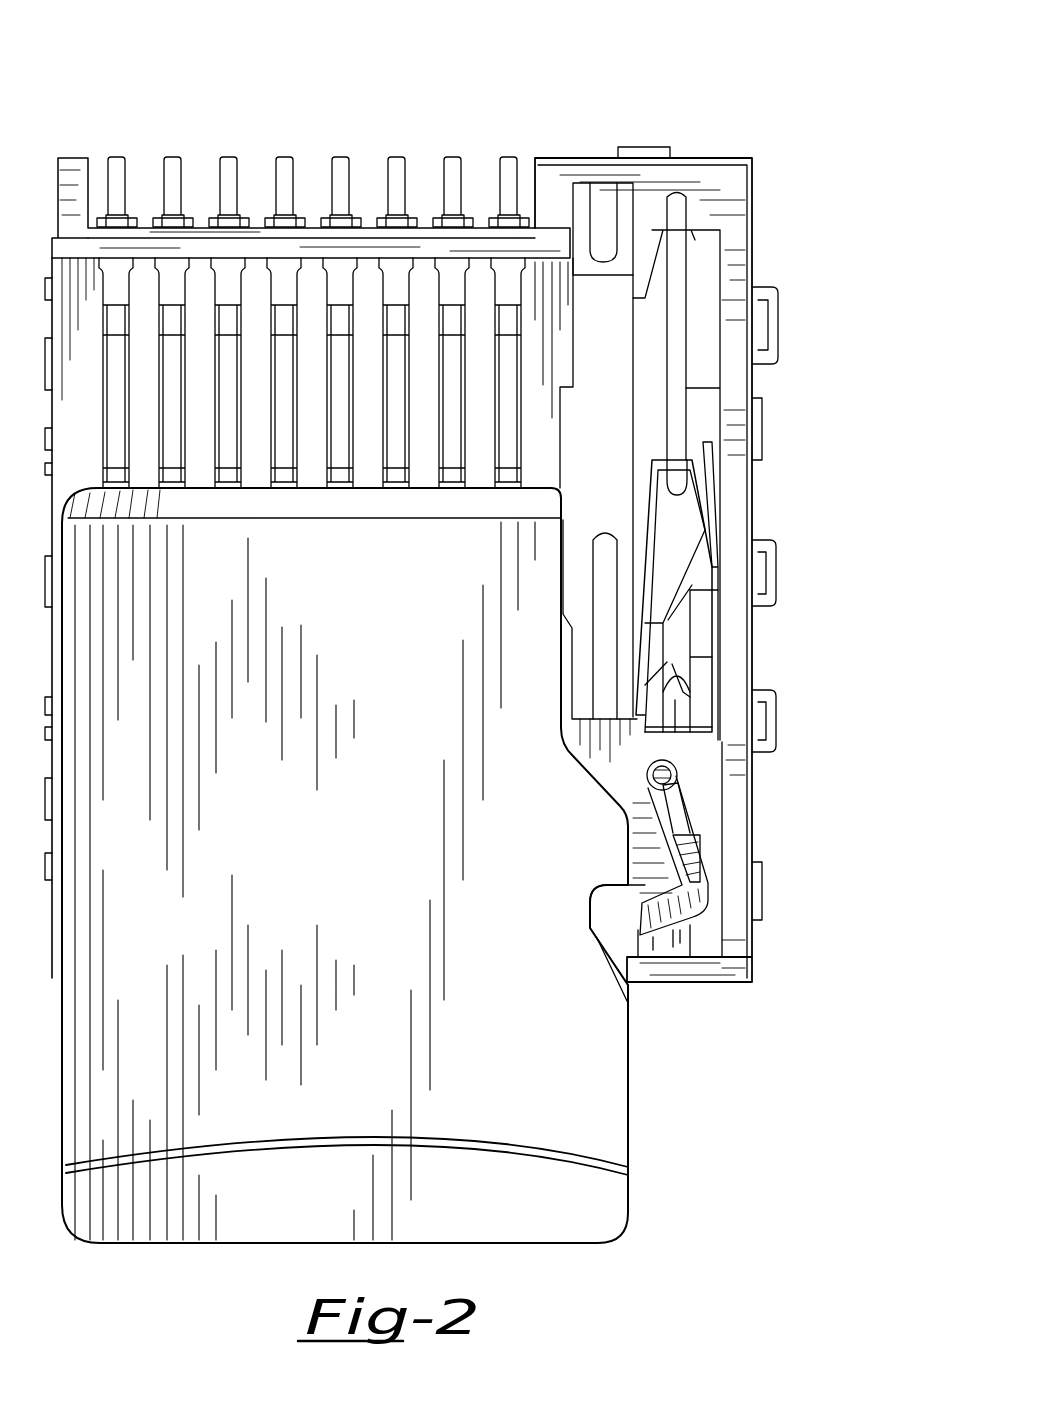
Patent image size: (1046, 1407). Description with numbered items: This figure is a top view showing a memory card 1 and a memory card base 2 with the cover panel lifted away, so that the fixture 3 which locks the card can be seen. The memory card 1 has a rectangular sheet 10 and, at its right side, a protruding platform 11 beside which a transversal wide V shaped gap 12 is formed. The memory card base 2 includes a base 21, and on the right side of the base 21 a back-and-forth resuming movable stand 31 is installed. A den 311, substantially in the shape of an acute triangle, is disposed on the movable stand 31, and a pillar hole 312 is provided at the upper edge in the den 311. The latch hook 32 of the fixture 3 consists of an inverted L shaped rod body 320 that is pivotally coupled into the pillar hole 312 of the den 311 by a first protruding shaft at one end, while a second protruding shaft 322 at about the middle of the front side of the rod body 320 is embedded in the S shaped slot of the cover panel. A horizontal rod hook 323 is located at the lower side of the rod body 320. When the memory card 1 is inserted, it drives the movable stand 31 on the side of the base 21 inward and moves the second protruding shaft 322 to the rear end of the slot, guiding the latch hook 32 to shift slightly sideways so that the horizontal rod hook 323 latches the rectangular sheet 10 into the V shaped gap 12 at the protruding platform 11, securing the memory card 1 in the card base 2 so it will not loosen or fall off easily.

The memory card 1 is at (634, 1108).
The rectangular sheet 10 is at (290, 1095).
The protruding platform 11 is at (633, 1066).
The transversal wide V shaped gap 12 is at (604, 926).
The memory card base 2 is at (488, 148).
The base 21 is at (757, 271).
The fixture 3 is at (713, 808).
The back-and-forth resuming movable stand 31 is at (721, 595).
The den 311 is at (717, 912).
The pillar hole 312 is at (690, 770).
The latch hook 32 is at (706, 842).
The rod body 320 is at (700, 797).
The second protruding shaft 322 is at (706, 853).
The horizontal rod hook 323 is at (641, 936).